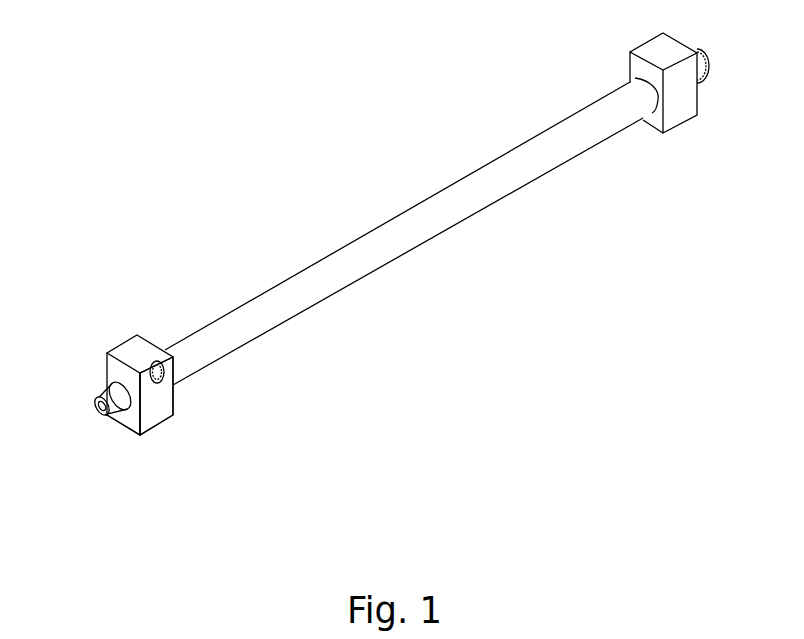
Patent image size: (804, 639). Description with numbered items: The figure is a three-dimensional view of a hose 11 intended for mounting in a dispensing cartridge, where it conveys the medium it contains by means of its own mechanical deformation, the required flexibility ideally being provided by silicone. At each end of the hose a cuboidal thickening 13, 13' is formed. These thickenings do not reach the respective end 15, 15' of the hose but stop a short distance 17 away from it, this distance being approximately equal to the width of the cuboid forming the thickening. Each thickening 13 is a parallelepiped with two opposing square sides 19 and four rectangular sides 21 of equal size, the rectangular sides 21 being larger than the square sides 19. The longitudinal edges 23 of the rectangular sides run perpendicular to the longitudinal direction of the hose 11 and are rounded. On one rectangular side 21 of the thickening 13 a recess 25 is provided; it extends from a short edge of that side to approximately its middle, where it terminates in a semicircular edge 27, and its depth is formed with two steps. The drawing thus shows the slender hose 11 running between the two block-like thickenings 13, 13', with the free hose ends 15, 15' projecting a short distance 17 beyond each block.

The hose 11 is at (306, 170).
The thickening 13 is at (226, 366).
The thickening 13' is at (668, 134).
The end of the hose 15 is at (76, 470).
The end of the hose 15' is at (749, 152).
The distance from the thickening to the end of the hose 17 is at (88, 376).
The square side of the thickening 19 is at (140, 350).
The rectangular side of the thickening 21 is at (162, 405).
The longitudinal edges of the thickening 23 is at (139, 436).
The recess 25 is at (165, 372).
The semicircular edge 27 is at (173, 387).